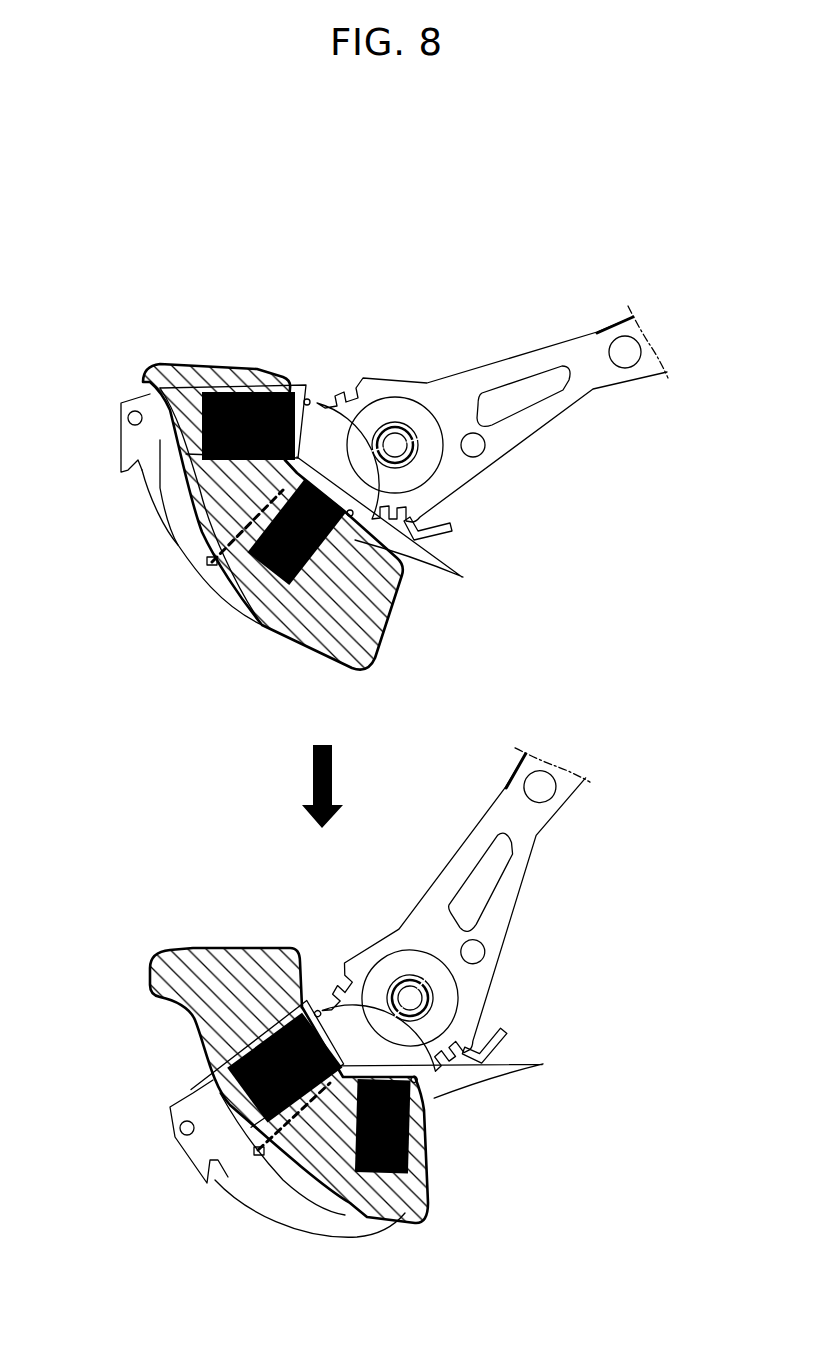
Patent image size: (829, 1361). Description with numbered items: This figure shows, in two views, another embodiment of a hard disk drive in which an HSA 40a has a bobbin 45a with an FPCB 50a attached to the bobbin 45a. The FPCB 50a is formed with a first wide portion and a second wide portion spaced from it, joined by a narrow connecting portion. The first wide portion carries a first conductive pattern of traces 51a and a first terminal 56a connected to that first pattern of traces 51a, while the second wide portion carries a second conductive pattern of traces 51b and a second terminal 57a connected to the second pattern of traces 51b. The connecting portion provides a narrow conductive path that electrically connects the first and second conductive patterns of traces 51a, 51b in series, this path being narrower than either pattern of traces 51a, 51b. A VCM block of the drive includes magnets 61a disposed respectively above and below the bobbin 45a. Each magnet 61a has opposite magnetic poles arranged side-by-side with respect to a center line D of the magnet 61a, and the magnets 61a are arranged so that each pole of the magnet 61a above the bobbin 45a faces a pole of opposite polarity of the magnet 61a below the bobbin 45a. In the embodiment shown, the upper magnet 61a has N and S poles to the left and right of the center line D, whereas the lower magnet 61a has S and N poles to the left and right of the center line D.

The HSA 40a is at (380, 366).
The magnet 61a is at (145, 385).
The first terminal 56a is at (308, 398).
The second terminal 57a is at (354, 516).
The first conductive pattern of traces 51a is at (268, 452).
The second conductive pattern of traces 51b is at (245, 518).
The FPCB 50a is at (175, 546).
The bobbin 45a is at (203, 593).
The center line D is at (210, 572).